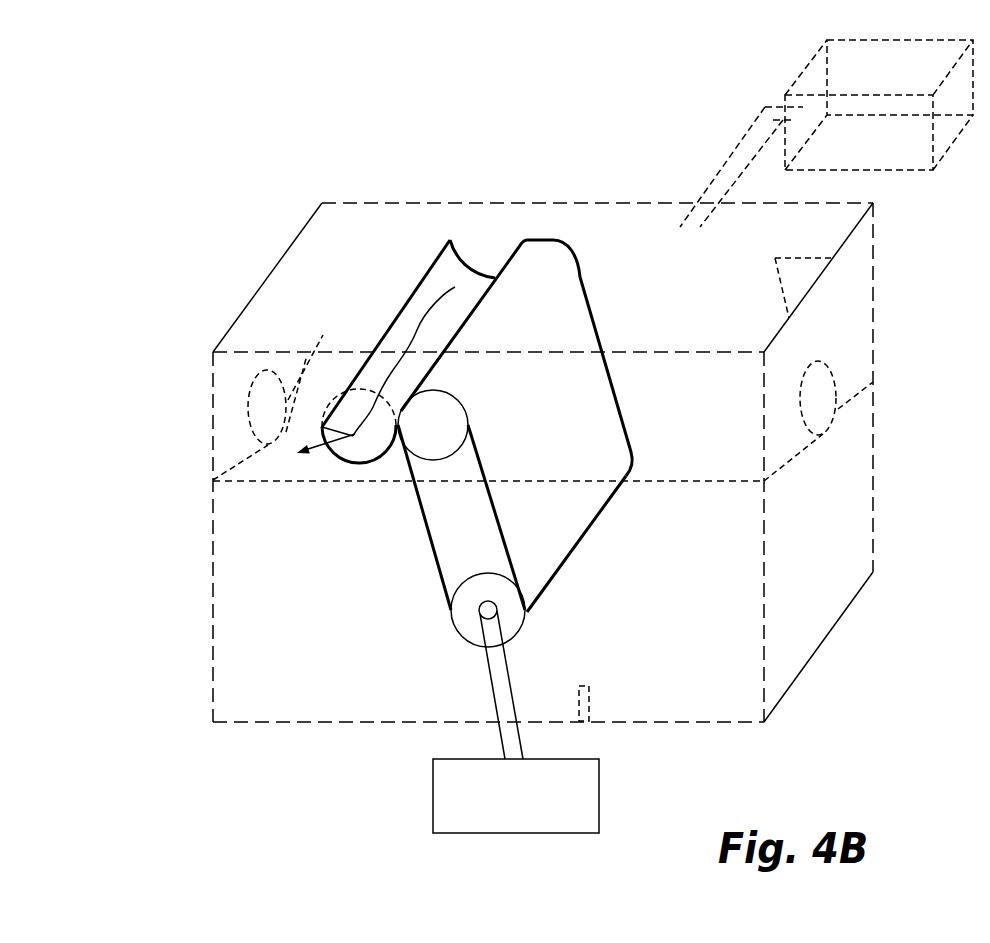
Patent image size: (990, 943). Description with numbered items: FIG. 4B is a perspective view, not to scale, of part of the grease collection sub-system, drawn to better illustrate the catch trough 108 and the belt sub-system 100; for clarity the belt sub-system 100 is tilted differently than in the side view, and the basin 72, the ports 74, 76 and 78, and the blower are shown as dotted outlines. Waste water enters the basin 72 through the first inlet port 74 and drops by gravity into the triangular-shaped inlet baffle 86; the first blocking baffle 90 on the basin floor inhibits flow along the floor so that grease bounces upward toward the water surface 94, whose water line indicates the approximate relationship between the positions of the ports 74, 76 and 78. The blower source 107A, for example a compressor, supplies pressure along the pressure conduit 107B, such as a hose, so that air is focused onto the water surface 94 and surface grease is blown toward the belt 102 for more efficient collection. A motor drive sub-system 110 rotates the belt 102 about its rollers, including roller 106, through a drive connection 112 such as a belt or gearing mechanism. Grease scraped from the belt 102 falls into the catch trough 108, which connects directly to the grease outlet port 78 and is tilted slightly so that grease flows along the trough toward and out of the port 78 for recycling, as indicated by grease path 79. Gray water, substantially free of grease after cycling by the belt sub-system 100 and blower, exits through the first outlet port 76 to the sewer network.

The basin 72 is at (557, 203).
The first inlet port 74 is at (833, 388).
The first outlet port 76 is at (248, 408).
The grease outlet port 78 is at (331, 401).
The grease path 79 is at (322, 444).
The triangular-shaped inlet baffle 86 is at (793, 258).
The first blocking baffle 90 is at (589, 703).
The water surface 94 is at (263, 483).
The belt sub-system 100 is at (545, 426).
The belt 102 is at (592, 312).
The roller 106 is at (516, 618).
The blower source 107A is at (803, 70).
The pressure conduit 107B is at (708, 174).
The catch trough 108 is at (460, 260).
The motor drive sub-system 110 is at (583, 745).
The drive connection 112 is at (503, 740).